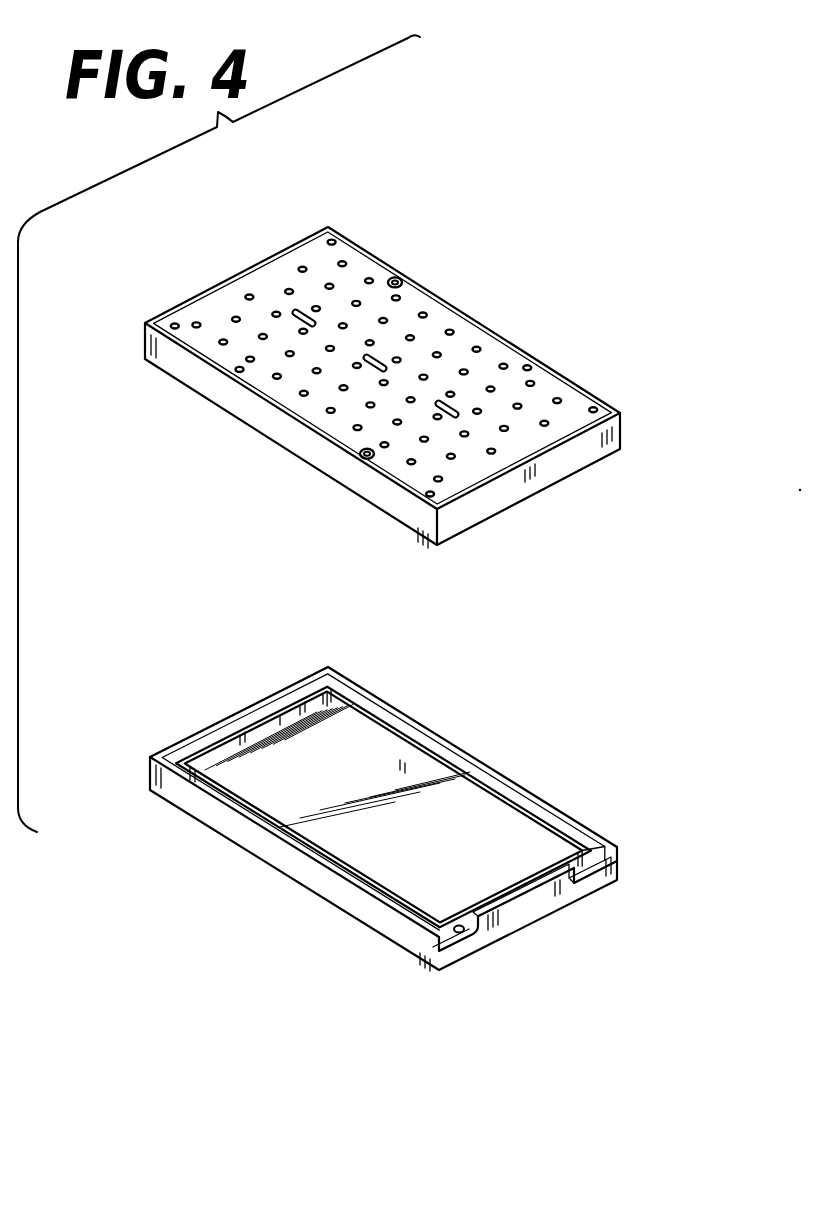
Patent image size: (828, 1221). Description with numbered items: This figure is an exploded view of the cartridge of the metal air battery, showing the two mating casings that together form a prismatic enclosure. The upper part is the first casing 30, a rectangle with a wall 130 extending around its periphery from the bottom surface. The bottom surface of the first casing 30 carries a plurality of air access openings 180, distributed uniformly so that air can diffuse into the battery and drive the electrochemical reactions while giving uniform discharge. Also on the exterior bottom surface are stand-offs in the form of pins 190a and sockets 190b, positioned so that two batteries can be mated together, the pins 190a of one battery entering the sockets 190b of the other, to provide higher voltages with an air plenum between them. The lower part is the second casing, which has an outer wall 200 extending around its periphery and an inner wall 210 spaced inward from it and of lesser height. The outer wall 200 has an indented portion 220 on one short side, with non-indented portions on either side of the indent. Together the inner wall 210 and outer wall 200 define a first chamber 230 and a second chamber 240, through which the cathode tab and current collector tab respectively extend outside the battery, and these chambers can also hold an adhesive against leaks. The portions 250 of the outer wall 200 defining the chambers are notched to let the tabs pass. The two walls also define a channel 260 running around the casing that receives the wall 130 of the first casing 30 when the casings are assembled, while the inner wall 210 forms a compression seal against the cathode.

The first casing 30 is at (273, 255).
The wall 130 is at (586, 455).
The air access openings 180 is at (235, 316).
The pins 190a is at (530, 366).
The sockets 190b is at (398, 279).
The outer wall 200 is at (492, 763).
The inner wall 210 is at (383, 718).
The indented portion 220 is at (528, 918).
The first chamber 230 is at (468, 934).
The second chamber 240 is at (590, 852).
The notched portions 250 is at (597, 886).
The channel 260 is at (212, 737).